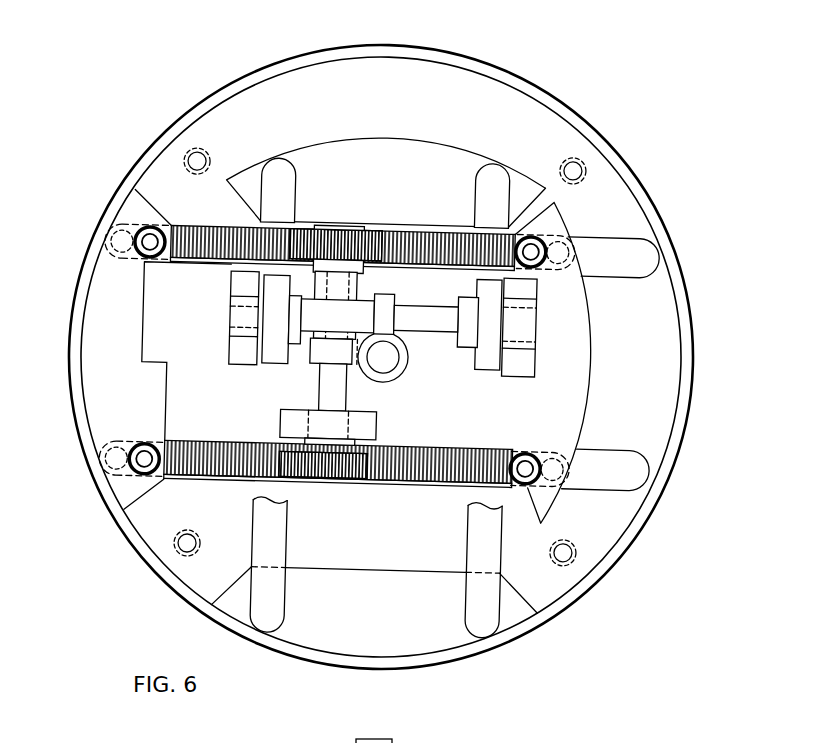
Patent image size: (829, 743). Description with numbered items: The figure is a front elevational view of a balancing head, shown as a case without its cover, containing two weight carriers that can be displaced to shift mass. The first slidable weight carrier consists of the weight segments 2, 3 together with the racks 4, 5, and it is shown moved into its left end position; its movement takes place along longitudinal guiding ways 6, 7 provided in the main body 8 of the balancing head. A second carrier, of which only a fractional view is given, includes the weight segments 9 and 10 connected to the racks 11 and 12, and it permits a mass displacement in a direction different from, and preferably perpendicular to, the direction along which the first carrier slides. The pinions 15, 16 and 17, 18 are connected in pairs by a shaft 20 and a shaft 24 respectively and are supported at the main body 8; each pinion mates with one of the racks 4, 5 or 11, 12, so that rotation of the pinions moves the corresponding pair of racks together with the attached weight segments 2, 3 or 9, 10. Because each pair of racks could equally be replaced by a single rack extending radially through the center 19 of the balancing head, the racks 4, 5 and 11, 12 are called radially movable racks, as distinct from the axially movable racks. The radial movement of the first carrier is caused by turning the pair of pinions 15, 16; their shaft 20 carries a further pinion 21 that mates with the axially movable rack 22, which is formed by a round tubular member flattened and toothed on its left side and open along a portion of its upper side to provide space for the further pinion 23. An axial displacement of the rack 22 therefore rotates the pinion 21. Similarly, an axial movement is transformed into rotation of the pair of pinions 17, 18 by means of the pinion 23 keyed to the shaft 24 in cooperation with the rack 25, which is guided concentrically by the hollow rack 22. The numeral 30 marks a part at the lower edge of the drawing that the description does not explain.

The weight segment 2 is at (121, 328).
The weight segment 3 is at (572, 382).
The rack 4 is at (229, 242).
The rack 5 is at (225, 458).
The longitudinal guiding way 6 is at (638, 267).
The longitudinal guiding way 7 is at (635, 470).
The main body 8 is at (603, 527).
The weight segment 9 is at (434, 165).
The weight segment 10 is at (407, 630).
The rack 11 is at (502, 178).
The rack 12 is at (273, 170).
The pinion 15 is at (333, 464).
The pinion 16 is at (337, 240).
The pinion 17 is at (271, 346).
The pinion 18 is at (488, 361).
The center 19 is at (378, 372).
The shaft 20 is at (332, 397).
The pinion 21 is at (340, 352).
The axially movable rack 22 is at (376, 378).
The pinion 23 is at (384, 316).
The shaft 24 is at (440, 321).
The rack 25 is at (384, 358).
The adjusting screw 30 is at (338, 740).